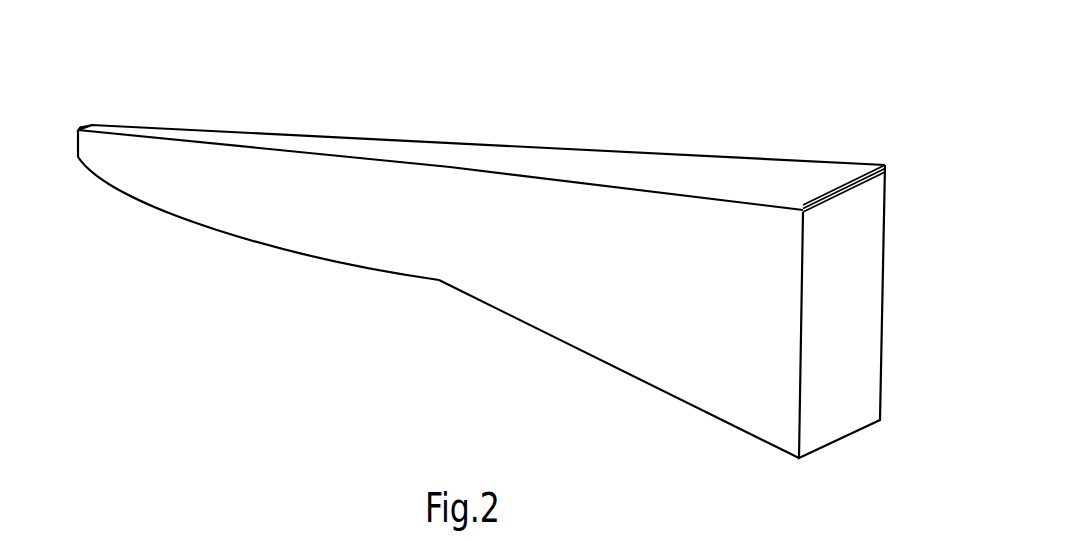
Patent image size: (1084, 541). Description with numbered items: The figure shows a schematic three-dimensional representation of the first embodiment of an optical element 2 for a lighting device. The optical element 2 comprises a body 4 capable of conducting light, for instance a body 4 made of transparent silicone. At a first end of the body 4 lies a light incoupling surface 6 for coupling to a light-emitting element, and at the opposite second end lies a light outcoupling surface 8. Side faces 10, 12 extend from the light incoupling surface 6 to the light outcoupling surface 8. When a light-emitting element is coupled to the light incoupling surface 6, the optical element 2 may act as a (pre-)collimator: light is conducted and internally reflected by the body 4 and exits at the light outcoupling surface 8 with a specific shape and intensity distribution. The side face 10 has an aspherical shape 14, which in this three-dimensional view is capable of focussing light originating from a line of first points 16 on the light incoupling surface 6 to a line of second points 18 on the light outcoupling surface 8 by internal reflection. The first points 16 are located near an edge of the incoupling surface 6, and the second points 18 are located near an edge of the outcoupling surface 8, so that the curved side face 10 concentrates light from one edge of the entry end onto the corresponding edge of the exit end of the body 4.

The optical element 2 is at (797, 69).
The body 4 is at (677, 362).
The light incoupling surface 6 is at (77, 142).
The light outcoupling surface 8 is at (855, 310).
The side face 10 is at (424, 299).
The side face 12 is at (549, 162).
The aspherical shape 14 is at (222, 236).
The first point 16 is at (78, 130).
The second point 18 is at (888, 170).